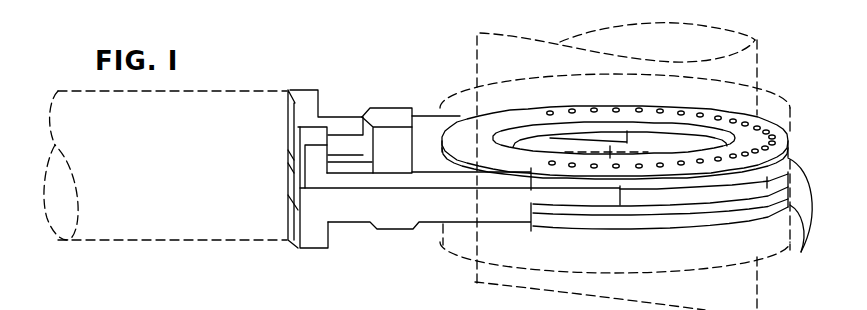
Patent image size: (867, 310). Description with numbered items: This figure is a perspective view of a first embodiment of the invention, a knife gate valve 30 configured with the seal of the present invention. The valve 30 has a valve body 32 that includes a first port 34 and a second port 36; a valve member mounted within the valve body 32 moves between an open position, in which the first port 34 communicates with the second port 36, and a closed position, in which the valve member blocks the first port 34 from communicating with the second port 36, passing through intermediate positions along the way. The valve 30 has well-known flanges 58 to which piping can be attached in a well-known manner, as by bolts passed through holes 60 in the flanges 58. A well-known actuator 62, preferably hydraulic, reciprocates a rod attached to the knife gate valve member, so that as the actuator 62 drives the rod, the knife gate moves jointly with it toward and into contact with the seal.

The valve 30 is at (428, 98).
The valve body 32 is at (448, 208).
The first port 34 is at (656, 54).
The second port 36 is at (554, 243).
The flanges 58 is at (804, 217).
The holes 60 is at (640, 112).
The actuator 62 is at (136, 232).